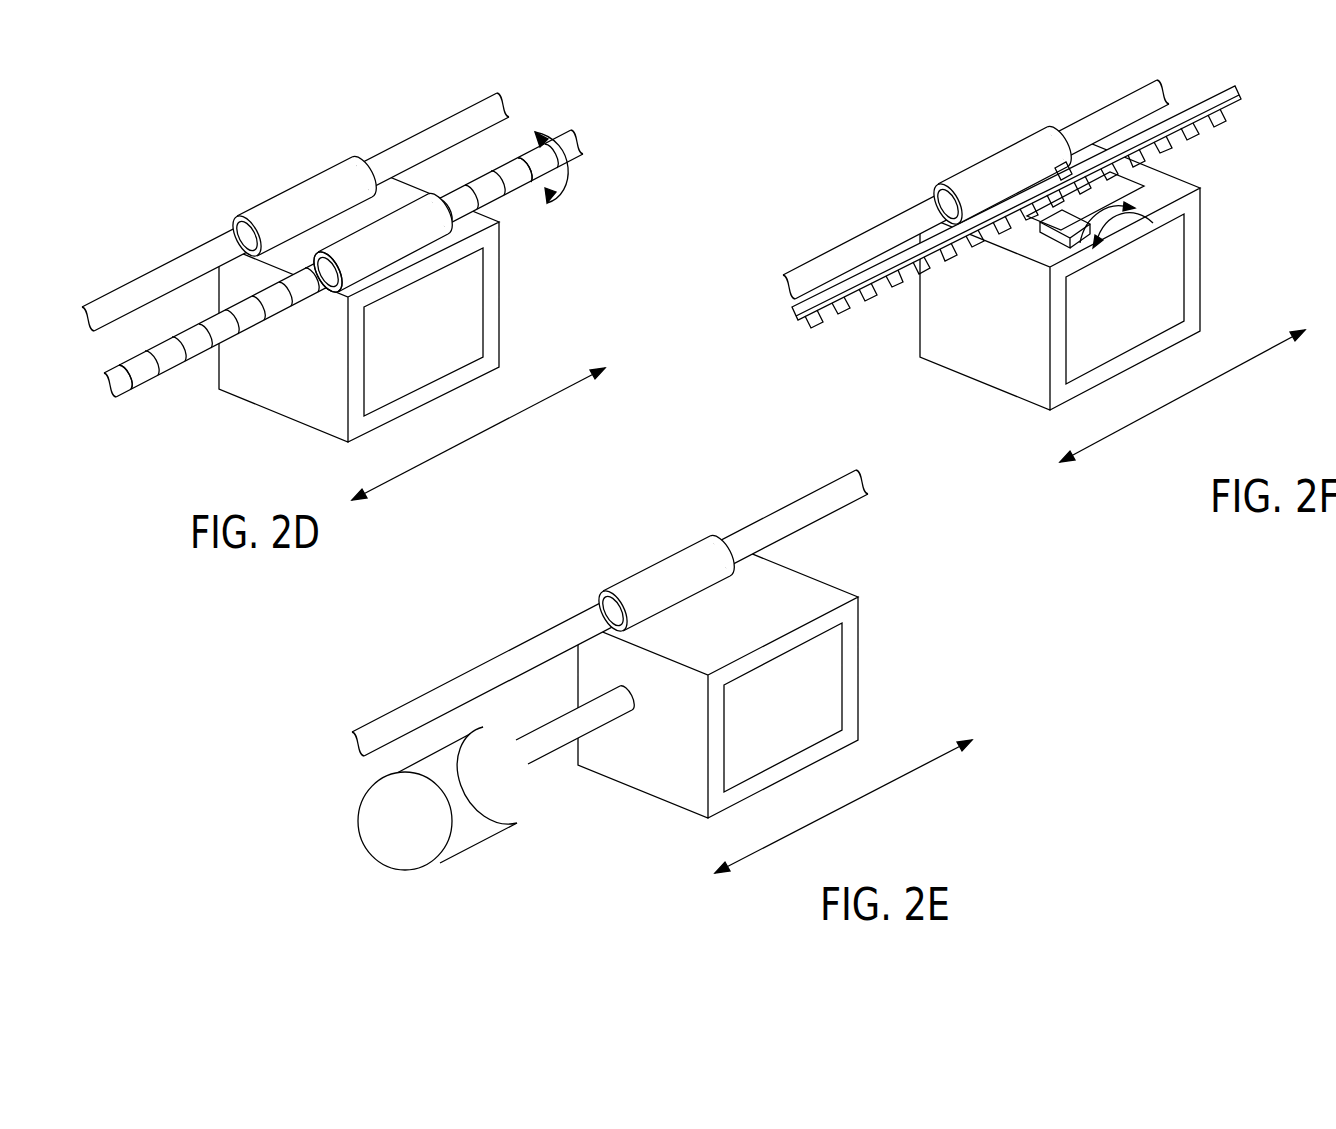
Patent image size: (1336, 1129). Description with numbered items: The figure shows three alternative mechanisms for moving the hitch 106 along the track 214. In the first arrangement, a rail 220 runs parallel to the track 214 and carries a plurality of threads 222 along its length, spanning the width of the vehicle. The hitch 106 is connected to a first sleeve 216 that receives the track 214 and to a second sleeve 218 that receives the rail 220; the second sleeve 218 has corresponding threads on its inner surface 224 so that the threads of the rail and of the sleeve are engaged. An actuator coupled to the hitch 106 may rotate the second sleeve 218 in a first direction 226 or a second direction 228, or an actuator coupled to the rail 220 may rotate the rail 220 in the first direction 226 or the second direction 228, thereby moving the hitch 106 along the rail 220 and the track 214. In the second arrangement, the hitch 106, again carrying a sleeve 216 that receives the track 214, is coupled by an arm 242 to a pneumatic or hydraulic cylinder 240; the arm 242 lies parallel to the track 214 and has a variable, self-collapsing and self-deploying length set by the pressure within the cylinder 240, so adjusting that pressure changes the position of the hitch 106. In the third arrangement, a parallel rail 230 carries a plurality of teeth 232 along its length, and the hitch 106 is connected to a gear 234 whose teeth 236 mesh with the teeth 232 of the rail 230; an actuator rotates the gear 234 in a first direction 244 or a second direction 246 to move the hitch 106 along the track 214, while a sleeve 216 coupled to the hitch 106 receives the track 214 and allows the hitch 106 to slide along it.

In FIG. 2D, the hitch 106 is at (502, 310).
In FIG. 2E, the hitch 106 is at (860, 683).
In FIG. 2F, the hitch 106 is at (1200, 283).
In FIG. 2D, the track 214 is at (402, 153).
In FIG. 2E, the track 214 is at (763, 525).
In FIG. 2F, the track 214 is at (1107, 123).
In FIG. 2D, the first sleeve 216 is at (308, 203).
In FIG. 2E, the first sleeve 216 is at (668, 573).
In FIG. 2F, the first sleeve 216 is at (975, 193).
In FIG. 2D, the second sleeve 218 is at (403, 223).
In FIG. 2D, the rail 220 is at (192, 355).
In FIG. 2D, the threads 222 is at (147, 377).
In FIG. 2D, the inner surface 224 is at (333, 294).
In FIG. 2D, the first direction 226 is at (507, 138).
In FIG. 2D, the second direction 228 is at (565, 191).
In FIG. 2F, the rail 230 is at (1036, 181).
In FIG. 2F, the teeth 232 is at (1212, 137).
In FIG. 2F, the gear 234 is at (1058, 217).
In FIG. 2F, the teeth 236 is at (1067, 173).
In FIG. 2E, the pneumatic or hydraulic cylinder 240 is at (487, 820).
In FIG. 2E, the arm 242 is at (553, 742).
In FIG. 2F, the first direction 244 is at (1080, 243).
In FIG. 2F, the second direction 246 is at (1127, 222).